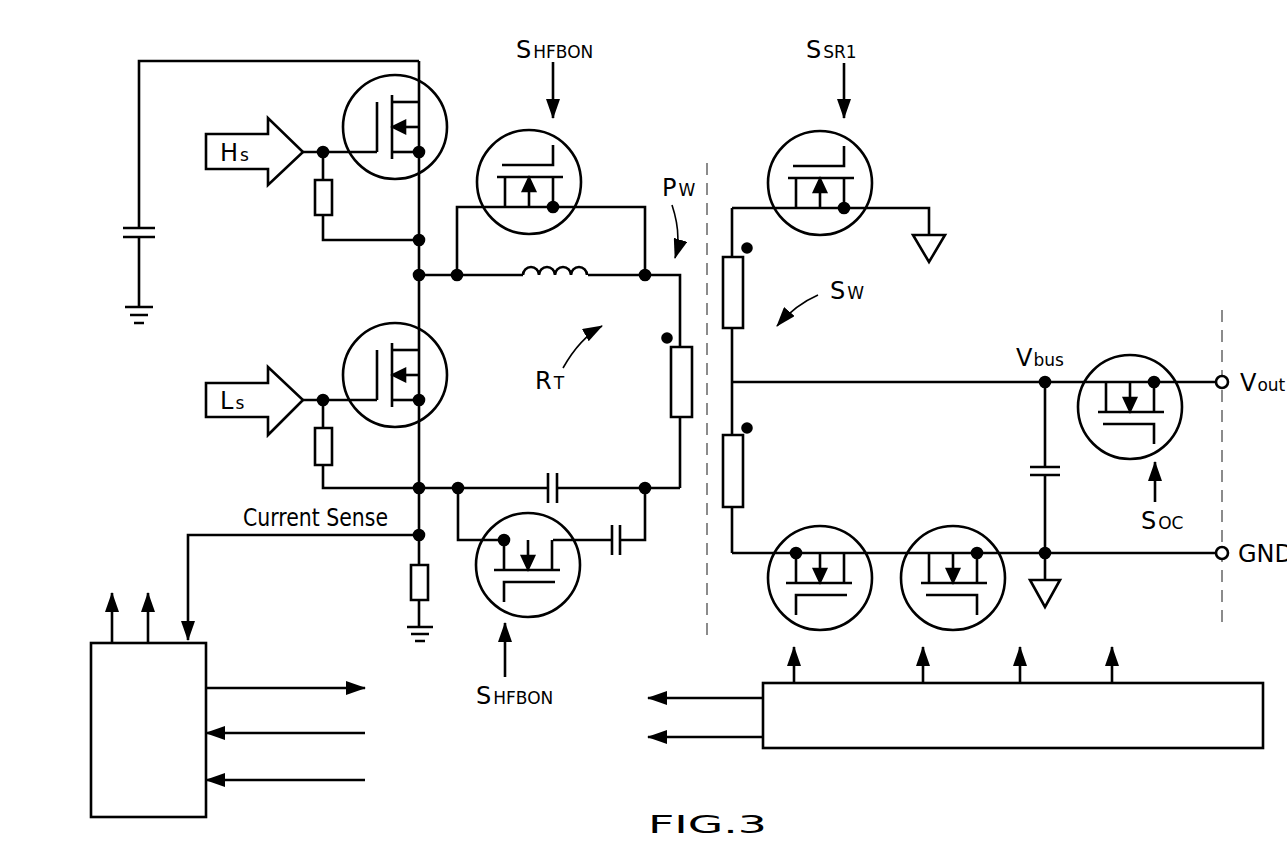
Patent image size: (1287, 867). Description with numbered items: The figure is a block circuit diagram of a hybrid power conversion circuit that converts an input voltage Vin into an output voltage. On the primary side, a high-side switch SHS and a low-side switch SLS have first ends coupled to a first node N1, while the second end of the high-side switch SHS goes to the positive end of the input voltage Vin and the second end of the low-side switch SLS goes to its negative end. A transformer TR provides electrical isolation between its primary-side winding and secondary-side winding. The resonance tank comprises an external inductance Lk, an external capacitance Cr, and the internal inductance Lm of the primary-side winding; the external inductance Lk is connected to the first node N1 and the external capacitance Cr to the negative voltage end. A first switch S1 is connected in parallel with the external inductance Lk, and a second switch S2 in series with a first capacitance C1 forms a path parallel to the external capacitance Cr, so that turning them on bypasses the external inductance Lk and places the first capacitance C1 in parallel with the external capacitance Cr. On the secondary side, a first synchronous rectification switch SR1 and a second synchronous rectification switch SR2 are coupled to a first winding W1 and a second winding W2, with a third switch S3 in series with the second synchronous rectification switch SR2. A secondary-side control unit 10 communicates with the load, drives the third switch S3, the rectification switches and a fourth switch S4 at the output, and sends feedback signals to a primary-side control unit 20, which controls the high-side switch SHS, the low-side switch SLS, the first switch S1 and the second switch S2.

The secondary-side control unit 10 is at (1017, 738).
The primary-side control unit 20 is at (157, 750).
The first switch S1 is at (541, 180).
The second switch S2 is at (540, 571).
The third switch S3 is at (811, 578).
The fourth switch S4 is at (1130, 395).
The first synchronous rectification switch SR1 is at (812, 171).
The second synchronous rectification switch SR2 is at (953, 562).
The high-side switch SHS is at (409, 127).
The low-side switch SLS is at (408, 375).
The external inductance Lk is at (556, 258).
The internal inductance Lm is at (661, 411).
The external capacitance Cr is at (549, 471).
The first capacitance C1 is at (599, 537).
The first winding W1 is at (755, 268).
The second winding W2 is at (755, 440).
The first node N1 is at (402, 263).
The transformer TR is at (953, 384).
The input voltage Vin is at (249, 192).